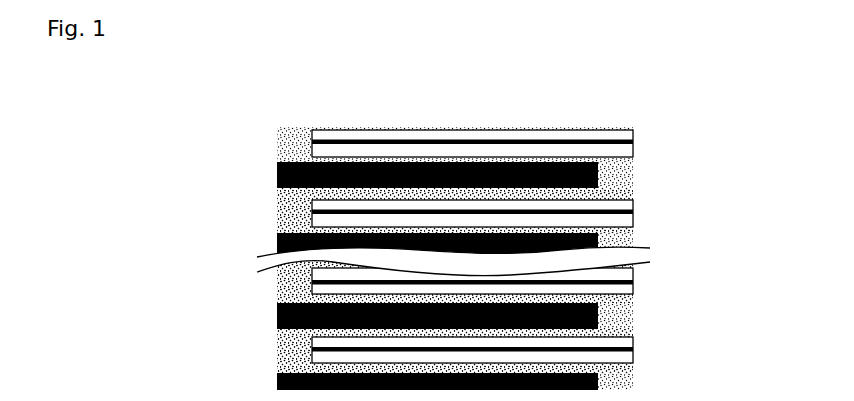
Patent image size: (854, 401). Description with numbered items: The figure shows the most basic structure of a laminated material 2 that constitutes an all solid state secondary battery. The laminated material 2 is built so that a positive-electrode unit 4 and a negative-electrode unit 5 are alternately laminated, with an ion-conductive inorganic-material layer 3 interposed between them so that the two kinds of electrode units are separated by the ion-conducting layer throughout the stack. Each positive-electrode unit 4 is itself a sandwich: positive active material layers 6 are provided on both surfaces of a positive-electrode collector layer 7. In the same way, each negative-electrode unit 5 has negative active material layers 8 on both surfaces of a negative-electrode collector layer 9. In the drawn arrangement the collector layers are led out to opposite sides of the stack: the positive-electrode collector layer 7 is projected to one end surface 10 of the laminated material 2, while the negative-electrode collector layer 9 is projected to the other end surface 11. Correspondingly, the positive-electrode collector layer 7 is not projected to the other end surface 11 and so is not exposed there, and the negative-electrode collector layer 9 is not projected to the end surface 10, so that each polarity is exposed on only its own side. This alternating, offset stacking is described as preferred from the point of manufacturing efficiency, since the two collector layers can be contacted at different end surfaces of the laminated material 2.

The laminated material 2 is at (664, 180).
The ion-conductive inorganic-material layer 3 is at (273, 218).
The positive-electrode unit 4 is at (404, 133).
The negative-electrode unit 5 is at (502, 113).
The positive active material layer 6 is at (269, 169).
The positive-electrode collector layer 7 is at (310, 158).
The negative active material layer 8 is at (623, 140).
The negative-electrode collector layer 9 is at (580, 127).
The end surface 10 is at (268, 285).
The other end surface 11 is at (644, 314).